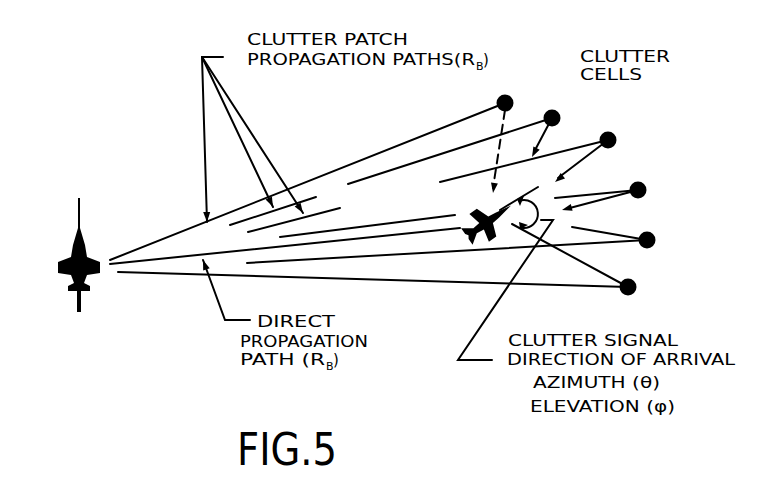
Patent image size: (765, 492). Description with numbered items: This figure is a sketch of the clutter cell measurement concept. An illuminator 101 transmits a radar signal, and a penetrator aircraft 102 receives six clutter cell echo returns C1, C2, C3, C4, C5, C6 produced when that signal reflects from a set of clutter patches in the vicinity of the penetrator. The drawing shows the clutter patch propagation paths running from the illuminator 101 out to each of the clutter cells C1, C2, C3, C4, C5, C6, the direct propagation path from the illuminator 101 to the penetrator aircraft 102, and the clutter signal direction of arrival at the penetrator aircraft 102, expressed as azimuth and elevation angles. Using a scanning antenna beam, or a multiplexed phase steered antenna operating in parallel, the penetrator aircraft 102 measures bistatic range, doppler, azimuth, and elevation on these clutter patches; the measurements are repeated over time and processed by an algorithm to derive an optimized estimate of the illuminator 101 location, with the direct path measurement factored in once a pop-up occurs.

The illuminator 101 is at (88, 276).
The penetrator aircraft 102 is at (413, 216).
The clutter cell echo return C1 is at (511, 93).
The clutter cell echo return C2 is at (559, 109).
The clutter cell echo return C3 is at (616, 132).
The clutter cell echo return C4 is at (643, 182).
The clutter cell echo return C5 is at (650, 232).
The clutter cell echo return C6 is at (640, 284).